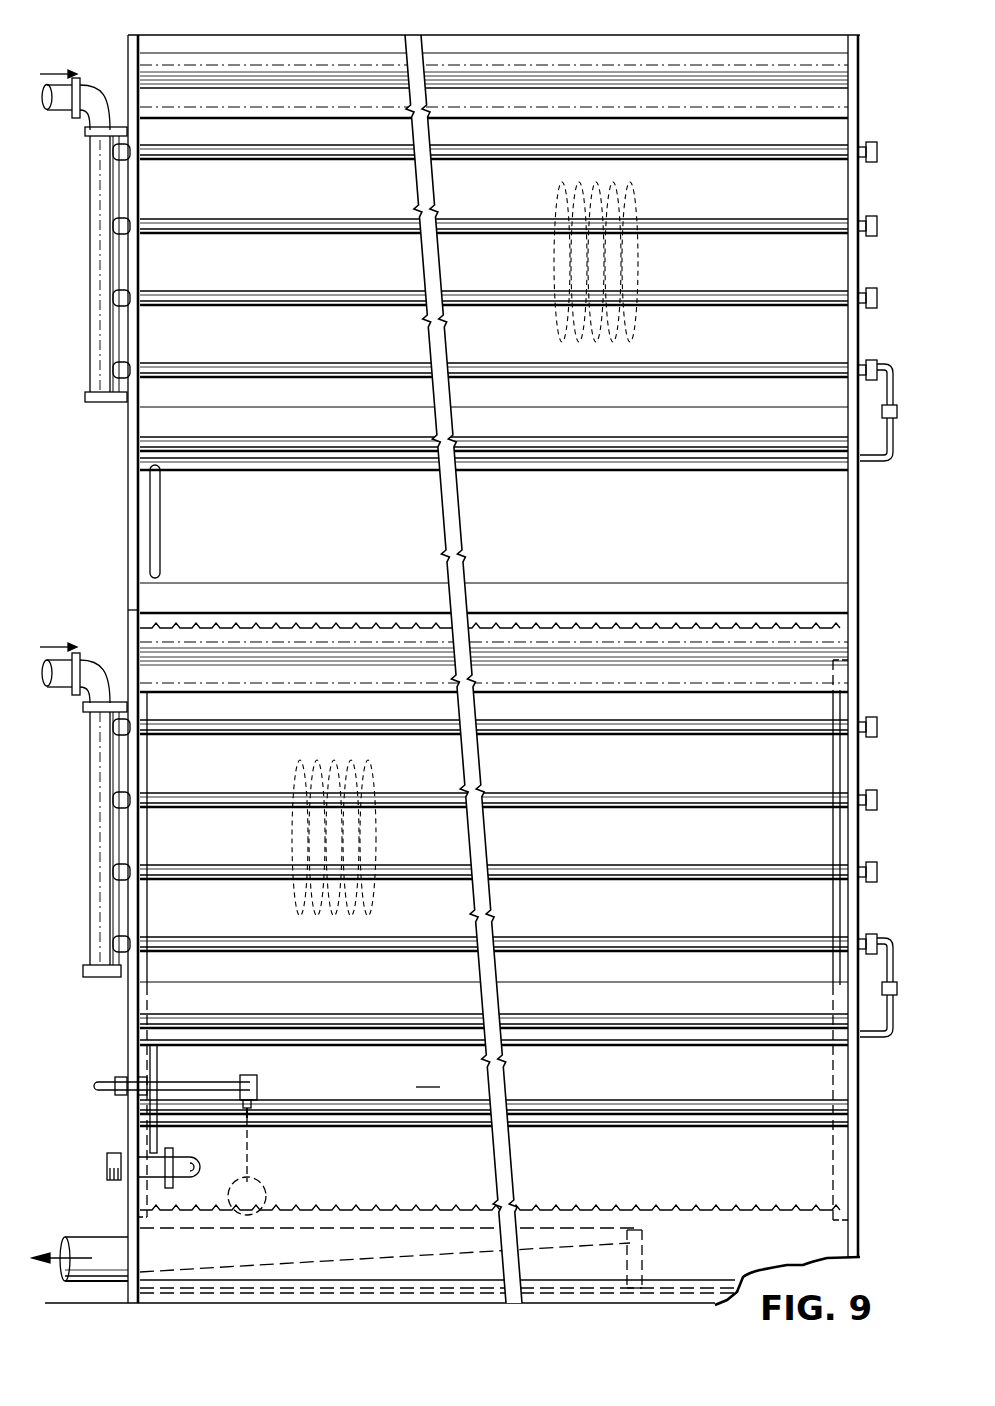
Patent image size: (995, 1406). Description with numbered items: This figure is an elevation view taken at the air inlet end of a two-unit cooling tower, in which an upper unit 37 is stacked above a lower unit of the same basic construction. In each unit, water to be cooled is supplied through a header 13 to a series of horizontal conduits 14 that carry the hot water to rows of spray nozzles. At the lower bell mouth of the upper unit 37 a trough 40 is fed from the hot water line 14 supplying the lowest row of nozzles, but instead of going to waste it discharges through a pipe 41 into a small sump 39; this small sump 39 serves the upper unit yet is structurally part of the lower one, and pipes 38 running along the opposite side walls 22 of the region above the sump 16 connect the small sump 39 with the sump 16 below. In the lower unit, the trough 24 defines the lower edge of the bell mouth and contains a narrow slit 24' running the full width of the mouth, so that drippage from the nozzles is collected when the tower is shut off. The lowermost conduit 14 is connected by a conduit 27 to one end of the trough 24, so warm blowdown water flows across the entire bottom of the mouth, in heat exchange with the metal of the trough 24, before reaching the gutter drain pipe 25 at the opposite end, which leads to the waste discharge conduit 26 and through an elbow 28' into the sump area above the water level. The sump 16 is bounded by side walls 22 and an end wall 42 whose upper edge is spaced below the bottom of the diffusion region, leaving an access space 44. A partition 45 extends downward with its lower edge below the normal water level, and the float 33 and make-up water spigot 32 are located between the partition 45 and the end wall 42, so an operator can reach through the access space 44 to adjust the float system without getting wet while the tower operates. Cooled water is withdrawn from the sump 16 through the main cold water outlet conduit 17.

The upper unit 37 is at (120, 53).
The header 13 is at (97, 219).
The horizontal conduits 14 is at (280, 300).
The trough 40 is at (385, 470).
The pipe 41 is at (150, 528).
The small sump 39 is at (782, 612).
The conduit 27 is at (880, 462).
The pipes 38 is at (148, 906).
The side walls 22 is at (852, 924).
The slit 24' is at (494, 991).
The pipe 25 is at (150, 1060).
The make-up water spigot 32 is at (257, 1082).
The access space 44 is at (428, 1074).
The trough 24 is at (494, 1064).
The waste discharge conduit 26 is at (115, 1156).
The elbow 28' is at (220, 1162).
The float 33 is at (268, 1190).
The conduit 17 is at (100, 1243).
The sump 16 is at (652, 1222).
The partition 45 is at (820, 1112).
The end wall 42 is at (820, 1180).